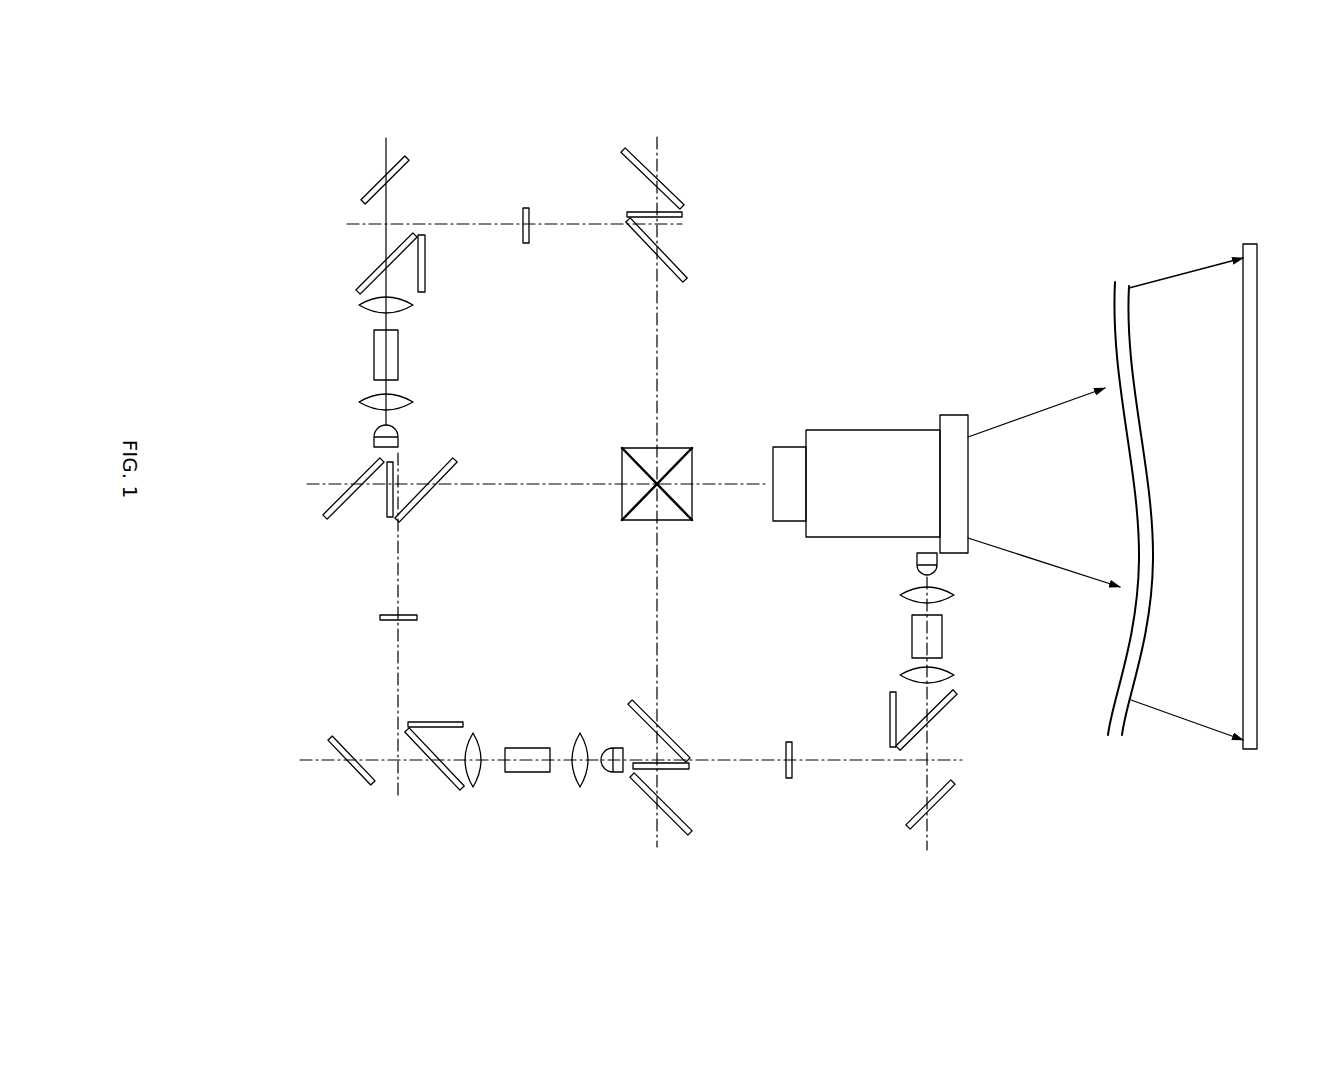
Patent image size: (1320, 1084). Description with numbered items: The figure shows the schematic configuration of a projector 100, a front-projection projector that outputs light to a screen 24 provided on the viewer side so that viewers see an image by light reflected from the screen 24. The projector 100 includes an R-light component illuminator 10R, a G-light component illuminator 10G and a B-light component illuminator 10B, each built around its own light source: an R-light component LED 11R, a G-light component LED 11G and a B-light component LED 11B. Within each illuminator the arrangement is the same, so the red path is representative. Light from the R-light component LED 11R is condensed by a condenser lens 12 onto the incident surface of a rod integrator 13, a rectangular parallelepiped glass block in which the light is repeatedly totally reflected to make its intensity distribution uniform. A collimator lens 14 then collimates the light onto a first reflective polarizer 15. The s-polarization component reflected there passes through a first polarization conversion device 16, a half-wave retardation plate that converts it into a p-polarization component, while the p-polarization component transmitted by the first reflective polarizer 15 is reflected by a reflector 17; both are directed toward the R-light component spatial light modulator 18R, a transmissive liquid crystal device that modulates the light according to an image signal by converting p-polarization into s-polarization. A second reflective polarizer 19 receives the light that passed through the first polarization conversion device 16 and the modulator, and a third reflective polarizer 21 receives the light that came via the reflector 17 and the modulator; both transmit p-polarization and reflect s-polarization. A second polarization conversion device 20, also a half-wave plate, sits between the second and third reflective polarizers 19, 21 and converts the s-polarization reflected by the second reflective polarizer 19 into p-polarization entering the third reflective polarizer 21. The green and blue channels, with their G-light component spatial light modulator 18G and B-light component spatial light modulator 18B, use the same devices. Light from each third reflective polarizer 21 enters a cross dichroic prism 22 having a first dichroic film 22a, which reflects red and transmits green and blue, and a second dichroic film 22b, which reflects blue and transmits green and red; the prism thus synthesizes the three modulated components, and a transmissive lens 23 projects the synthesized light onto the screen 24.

The projector 100 is at (963, 232).
The R-light component illuminator 10R is at (518, 295).
The G-light component illuminator 10G is at (518, 672).
The B-light component illuminator 10B is at (813, 648).
The R-light component LED 11R is at (377, 433).
The G-light component LED 11G is at (604, 768).
The B-light component LED 11B is at (913, 573).
The condenser lens 12 is at (362, 402).
The rod integrator 13 is at (375, 353).
The collimator lens 14 is at (360, 305).
The first reflective polarizer 15 is at (367, 277).
The first polarization conversion device 16 is at (428, 283).
The reflector 17 is at (363, 198).
The R-light component spatial light modulator 18R is at (527, 207).
The G-light component spatial light modulator 18G is at (380, 617).
The B-light component spatial light modulator 18B is at (788, 778).
The second reflective polarizer 19 is at (680, 202).
The second polarization conversion device 20 is at (683, 214).
The third reflective polarizer 21 is at (685, 275).
The cross dichroic prism 22 is at (665, 493).
The first dichroic film 22a is at (683, 505).
The second dichroic film 22b is at (630, 505).
The transmissive lens 23 is at (882, 435).
The screen 24 is at (1243, 244).